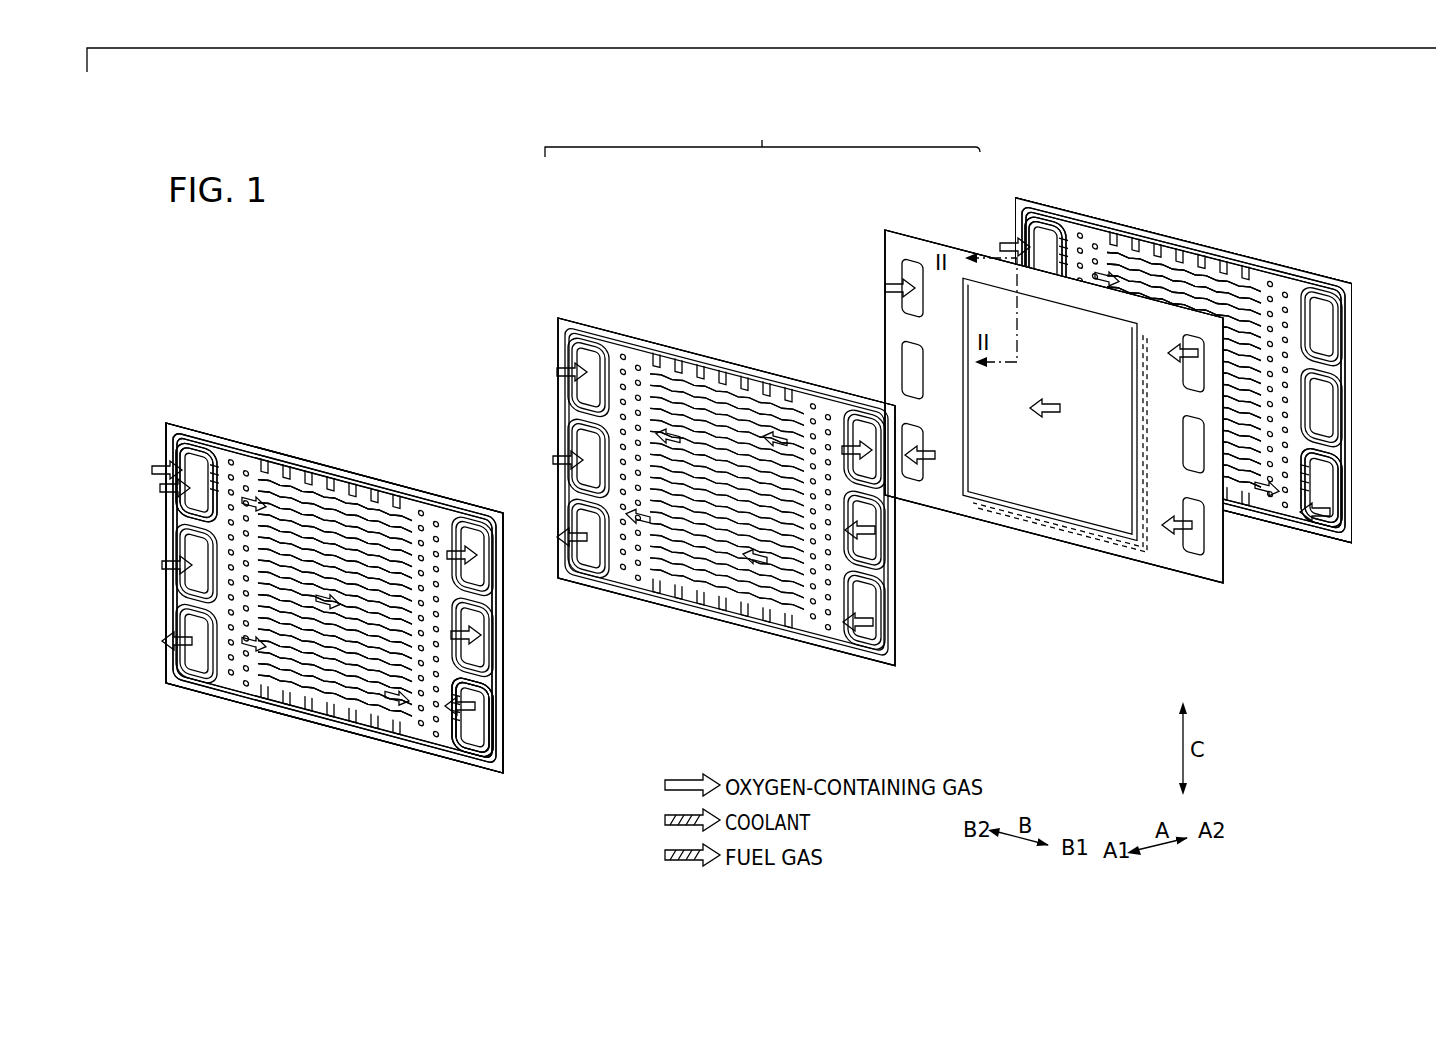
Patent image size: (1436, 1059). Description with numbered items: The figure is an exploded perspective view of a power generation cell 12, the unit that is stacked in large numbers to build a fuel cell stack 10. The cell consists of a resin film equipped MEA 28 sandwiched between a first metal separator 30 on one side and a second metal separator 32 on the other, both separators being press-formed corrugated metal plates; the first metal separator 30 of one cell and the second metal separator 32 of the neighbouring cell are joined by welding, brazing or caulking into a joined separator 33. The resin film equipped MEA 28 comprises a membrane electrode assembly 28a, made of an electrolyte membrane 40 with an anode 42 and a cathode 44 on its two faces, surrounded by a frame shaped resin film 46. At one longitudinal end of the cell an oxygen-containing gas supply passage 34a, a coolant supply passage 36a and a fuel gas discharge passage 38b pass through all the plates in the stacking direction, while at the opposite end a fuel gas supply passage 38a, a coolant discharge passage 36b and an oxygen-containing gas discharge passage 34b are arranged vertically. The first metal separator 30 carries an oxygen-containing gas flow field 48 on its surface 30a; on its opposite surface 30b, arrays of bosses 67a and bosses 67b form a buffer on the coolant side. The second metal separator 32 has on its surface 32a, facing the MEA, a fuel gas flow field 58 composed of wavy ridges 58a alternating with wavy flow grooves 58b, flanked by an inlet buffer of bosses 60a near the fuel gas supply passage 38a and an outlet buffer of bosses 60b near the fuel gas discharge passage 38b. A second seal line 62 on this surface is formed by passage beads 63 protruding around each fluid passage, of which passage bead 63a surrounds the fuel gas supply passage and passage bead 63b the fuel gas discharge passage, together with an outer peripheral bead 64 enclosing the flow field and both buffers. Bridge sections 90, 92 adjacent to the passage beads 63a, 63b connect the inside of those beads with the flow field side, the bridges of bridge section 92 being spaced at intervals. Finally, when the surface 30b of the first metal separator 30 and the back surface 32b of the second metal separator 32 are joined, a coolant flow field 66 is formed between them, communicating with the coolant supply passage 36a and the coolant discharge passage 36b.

The fuel cell stack 10 is at (357, 168).
The power generation cell 12 is at (762, 138).
The resin film equipped MEA 28 is at (884, 228).
The membrane electrode assembly 28a is at (1090, 537).
The first metal separator 30 is at (558, 312).
The surface of the first metal separator 30a is at (708, 620).
The surface of the first metal separator 30b is at (680, 607).
The second metal separator 32 is at (166, 416).
The surface of the second metal separator 32a is at (287, 716).
The surface of the second metal separator 32b is at (316, 719).
The joined separator 33 is at (378, 370).
The oxygen-containing gas supply passage 34a is at (476, 528).
The oxygen-containing gas discharge passage 34b is at (192, 635).
The coolant supply passage 36a is at (492, 659).
The coolant discharge passage 36b is at (199, 581).
The fuel gas supply passage 38a is at (1045, 262).
The fuel gas discharge passage 38b is at (479, 701).
The electrolyte membrane 40 is at (1068, 507).
The anode 42 is at (1137, 543).
The cathode 44 is at (1023, 492).
The resin film 46 is at (912, 246).
The oxygen-containing gas flow field 48 is at (718, 397).
The fuel gas flow field 58 is at (366, 421).
The wavy ridges 58a is at (297, 541).
The wavy flow grooves 58b is at (329, 541).
The bosses 60a is at (248, 676).
The bosses 60b is at (439, 731).
The second seal line 62 is at (580, 762).
The passage beads 63 is at (175, 506).
The passage bead 63a is at (1042, 127).
The passage bead 63b is at (479, 740).
The outer peripheral bead 64 is at (501, 753).
The coolant flow field 66 is at (683, 398).
The bosses 67a is at (823, 610).
The bosses 67b is at (630, 563).
The bridge section 90 is at (214, 487).
The bridge section 92 is at (456, 729).